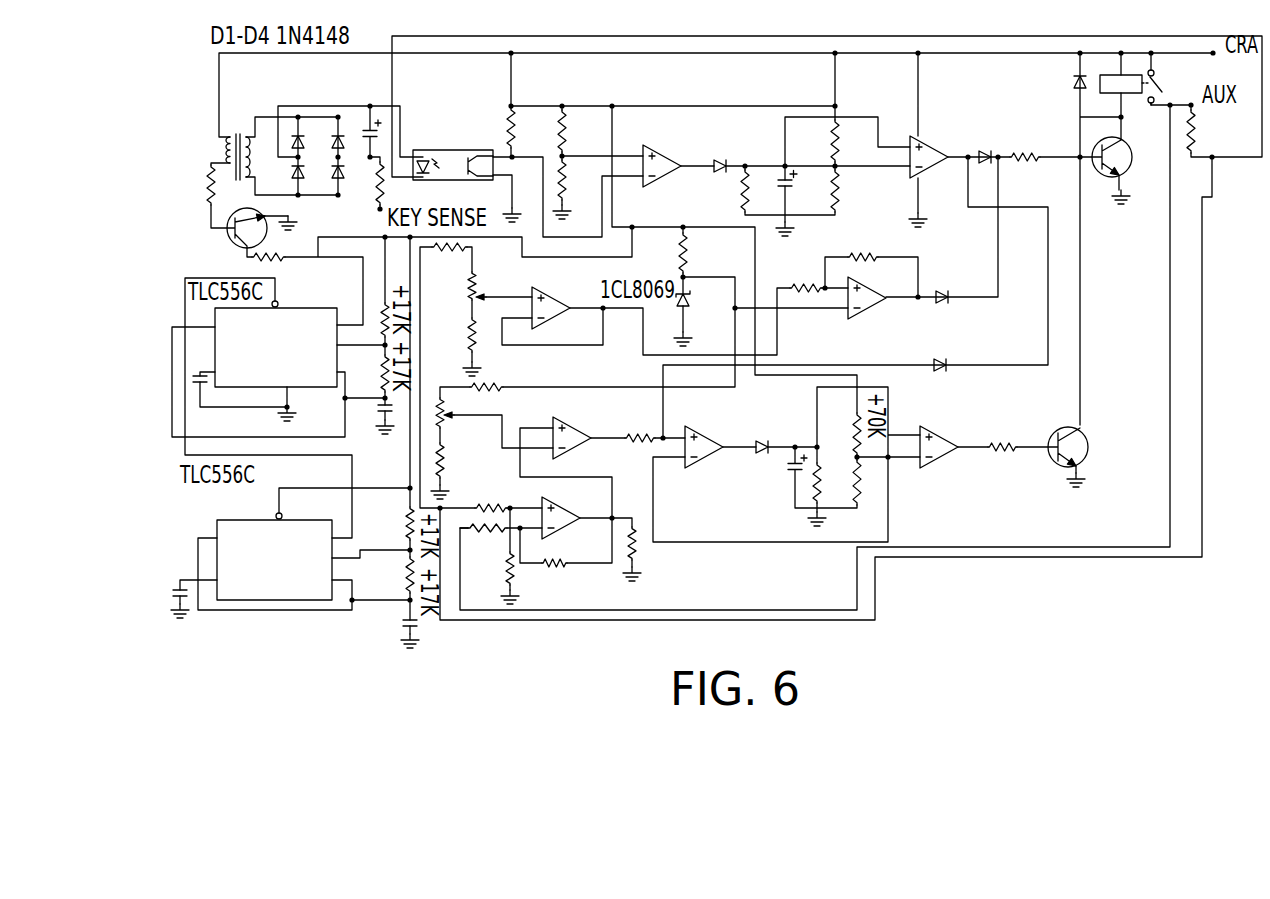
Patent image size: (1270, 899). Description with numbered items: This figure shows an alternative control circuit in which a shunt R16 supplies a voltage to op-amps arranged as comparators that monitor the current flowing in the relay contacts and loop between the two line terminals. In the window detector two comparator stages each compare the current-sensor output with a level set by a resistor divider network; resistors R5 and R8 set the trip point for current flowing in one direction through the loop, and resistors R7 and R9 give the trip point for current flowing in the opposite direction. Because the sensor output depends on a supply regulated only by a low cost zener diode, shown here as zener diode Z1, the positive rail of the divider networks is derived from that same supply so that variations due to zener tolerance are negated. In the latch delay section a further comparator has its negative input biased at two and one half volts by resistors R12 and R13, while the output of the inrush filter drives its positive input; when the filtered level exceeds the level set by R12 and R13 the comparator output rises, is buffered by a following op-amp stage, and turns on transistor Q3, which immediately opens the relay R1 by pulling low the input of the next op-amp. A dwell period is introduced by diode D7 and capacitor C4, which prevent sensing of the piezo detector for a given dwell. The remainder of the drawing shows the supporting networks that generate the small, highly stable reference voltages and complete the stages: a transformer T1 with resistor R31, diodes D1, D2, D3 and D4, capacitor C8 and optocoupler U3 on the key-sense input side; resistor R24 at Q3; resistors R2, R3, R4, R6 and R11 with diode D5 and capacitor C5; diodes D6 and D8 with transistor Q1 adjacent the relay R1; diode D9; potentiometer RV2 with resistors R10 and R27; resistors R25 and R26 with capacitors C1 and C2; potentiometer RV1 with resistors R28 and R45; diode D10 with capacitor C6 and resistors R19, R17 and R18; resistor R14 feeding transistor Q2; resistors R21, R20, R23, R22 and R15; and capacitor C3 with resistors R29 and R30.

The transformer T1 is at (238, 142).
The resistor 330R R31 is at (225, 173).
The bridge diode 1N4148 D1 is at (287, 175).
The bridge diode 1N4148 D2 is at (328, 165).
The bridge diode 1N4148 D3 is at (283, 114).
The bridge diode 1N4148 D4 is at (328, 129).
The capacitor 10uF C8 is at (363, 94).
The relay R1 is at (755, 144).
The transistor Q3 is at (218, 238).
The resistor 1K R24 is at (268, 268).
The optocoupler 4N35 U3 is at (452, 179).
The resistor 10K R2 is at (489, 121).
The resistor R5 is at (582, 130).
The resistor 47K R4 is at (581, 178).
The diode 1N4148 D5 is at (720, 142).
The resistor 2M2 R3 is at (727, 193).
The capacitor 1uF C5 is at (802, 184).
The resistor 10K R6 is at (815, 140).
The resistor R7 is at (856, 193).
The diode 1N4148 D6 is at (1010, 140).
The resistor R8 is at (1033, 171).
The diode 1N4007 with relay coil D8 is at (1069, 74).
The transistor BC337 Q1 is at (1121, 190).
The shunt R16 is at (1222, 132).
The resistor 10K R11 is at (705, 249).
The voltage reference ICL8069 Z1 is at (673, 274).
The resistor R12 is at (802, 264).
The resistor R13 is at (870, 240).
The diode D7 is at (989, 307).
The diode 1N4148 D9 is at (931, 341).
The resistor R9 is at (449, 269).
The potentiometer 2K RV2 is at (490, 278).
The resistor 820R R10 is at (449, 328).
The resistor 100K R27 is at (522, 372).
The resistor R25 is at (374, 320).
The resistor R26 is at (374, 373).
The capacitor 10N C1 is at (228, 405).
The capacitor 10N C2 is at (350, 407).
The potentiometer 5K RV1 is at (461, 415).
The resistor 8K2 R28 is at (477, 460).
The resistor 47K R45 is at (642, 415).
The diode 1N4148 D10 is at (776, 424).
The capacitor 10uF C6 is at (779, 481).
The resistor 1M R19 is at (831, 475).
The resistor R17 is at (842, 426).
The resistor 220K R18 is at (856, 503).
The resistor 1K R14 is at (999, 423).
The transistor BC548 Q2 is at (1100, 439).
The resistor 68K R21 is at (493, 489).
The resistor 68K R20 is at (487, 551).
The resistor 68K R23 is at (571, 550).
The resistor 68K R22 is at (533, 581).
The resistor 150R R15 is at (661, 560).
The capacitor 10N C3 is at (177, 561).
The resistor R29 is at (396, 523).
The resistor R30 is at (396, 575).
The capacitor C4 is at (378, 634).